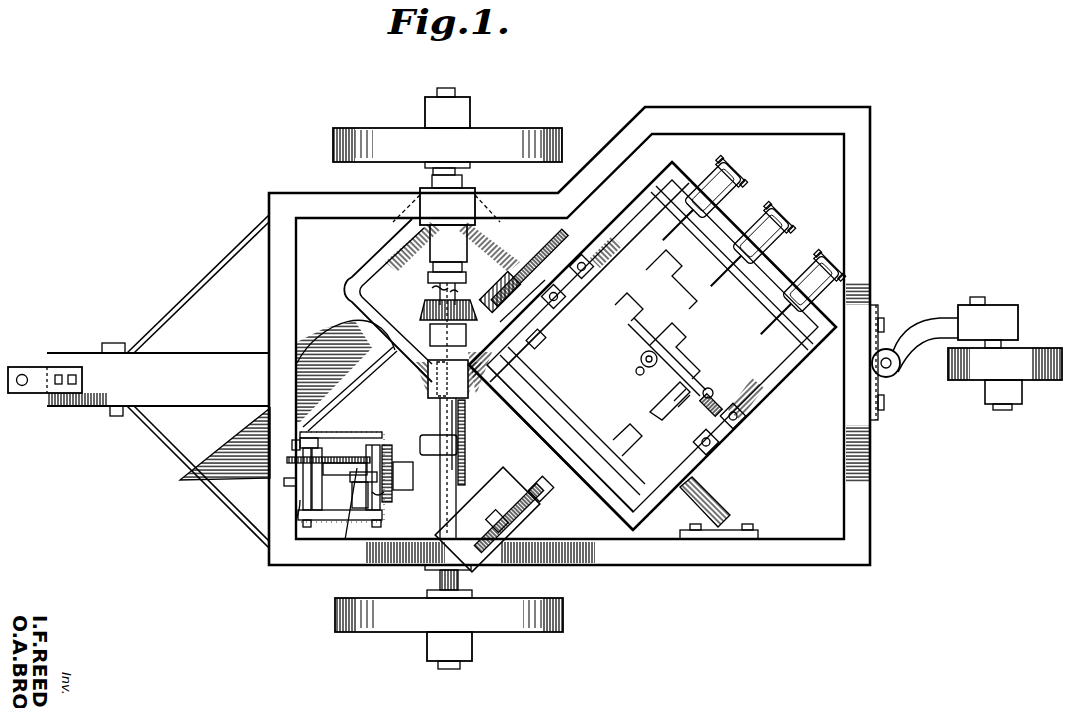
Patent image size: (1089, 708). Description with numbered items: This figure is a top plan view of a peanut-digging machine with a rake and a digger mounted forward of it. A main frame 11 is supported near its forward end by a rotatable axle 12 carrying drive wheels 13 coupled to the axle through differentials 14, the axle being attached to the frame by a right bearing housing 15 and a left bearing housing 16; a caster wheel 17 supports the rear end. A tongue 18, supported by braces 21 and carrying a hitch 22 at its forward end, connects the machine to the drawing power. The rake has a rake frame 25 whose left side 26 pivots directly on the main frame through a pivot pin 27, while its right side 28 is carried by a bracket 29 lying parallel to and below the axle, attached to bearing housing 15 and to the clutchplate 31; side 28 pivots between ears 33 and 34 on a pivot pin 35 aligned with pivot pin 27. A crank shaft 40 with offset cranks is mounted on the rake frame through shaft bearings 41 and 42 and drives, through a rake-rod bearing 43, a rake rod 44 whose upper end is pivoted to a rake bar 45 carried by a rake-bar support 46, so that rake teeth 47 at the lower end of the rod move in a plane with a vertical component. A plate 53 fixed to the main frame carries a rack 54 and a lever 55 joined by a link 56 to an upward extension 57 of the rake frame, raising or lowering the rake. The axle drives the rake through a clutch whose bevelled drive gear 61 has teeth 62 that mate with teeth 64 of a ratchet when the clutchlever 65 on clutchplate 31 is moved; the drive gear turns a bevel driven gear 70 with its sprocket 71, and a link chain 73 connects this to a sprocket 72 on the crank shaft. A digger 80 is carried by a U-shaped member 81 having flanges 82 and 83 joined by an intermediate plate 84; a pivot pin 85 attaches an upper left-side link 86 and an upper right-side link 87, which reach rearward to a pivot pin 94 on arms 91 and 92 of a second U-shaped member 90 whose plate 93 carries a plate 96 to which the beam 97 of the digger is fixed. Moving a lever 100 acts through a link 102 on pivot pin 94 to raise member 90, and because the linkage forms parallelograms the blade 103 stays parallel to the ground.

The main frame 11 is at (738, 567).
The axle 12 is at (460, 580).
The drive wheels 13 is at (373, 128).
The differentials 14 is at (470, 116).
The right bearing housing 15 is at (475, 190).
The left bearing housing 16 is at (427, 570).
The caster wheel 17 is at (950, 378).
The tongue 18 is at (203, 353).
The braces 21 is at (165, 314).
The hitch 22 is at (32, 367).
The rake frame 25 is at (816, 362).
The left side 26 is at (763, 402).
The pivot pin 27 is at (712, 512).
The right side 28 is at (628, 207).
The bracket 29 is at (356, 268).
The clutchplate 31 is at (428, 375).
The ear 33 is at (476, 368).
The ear 34 is at (514, 348).
The pivot pin 35 is at (542, 342).
The crank shaft 40 is at (660, 384).
The shaft bearing 41 is at (718, 446).
The shaft bearing 42 is at (575, 258).
The rake-rod bearing 43 is at (648, 392).
The rake rod 44 is at (712, 388).
The rake bar 45 is at (770, 348).
The rake-bar support 46 is at (806, 284).
The rake teeth 47 is at (678, 284).
The plate 53 is at (470, 480).
The rack 54 is at (546, 482).
The lever 55 is at (492, 516).
The link 56 is at (525, 475).
The upward extension 57 is at (546, 403).
The bevelled drive gear 61 is at (420, 316).
The teeth 62 is at (432, 298).
The teeth 64 is at (432, 284).
The clutchlever 65 is at (457, 445).
The bevel driven gear 70 is at (470, 290).
The sprocket 71 is at (510, 281).
The sprocket 72 is at (562, 254).
The link chain 73 is at (540, 306).
The digger 80 is at (351, 402).
The U-shaped member 81 is at (291, 502).
The flange 82 is at (296, 516).
The flange 83 is at (294, 442).
The intermediate plate 84 is at (298, 468).
The pivot pin 85 is at (311, 488).
The upper left-side link 86 is at (350, 521).
The upper right-side link 87 is at (336, 428).
The U-shaped member 90 is at (387, 445).
The arm 91 is at (380, 510).
The arm 92 is at (388, 445).
The intermediate plate 93 is at (390, 496).
The pivot pin 94 is at (378, 526).
The plate 96 is at (400, 464).
The beam 97 is at (262, 480).
The lever 100 is at (345, 457).
The link 102 is at (346, 514).
The blade 103 is at (230, 442).